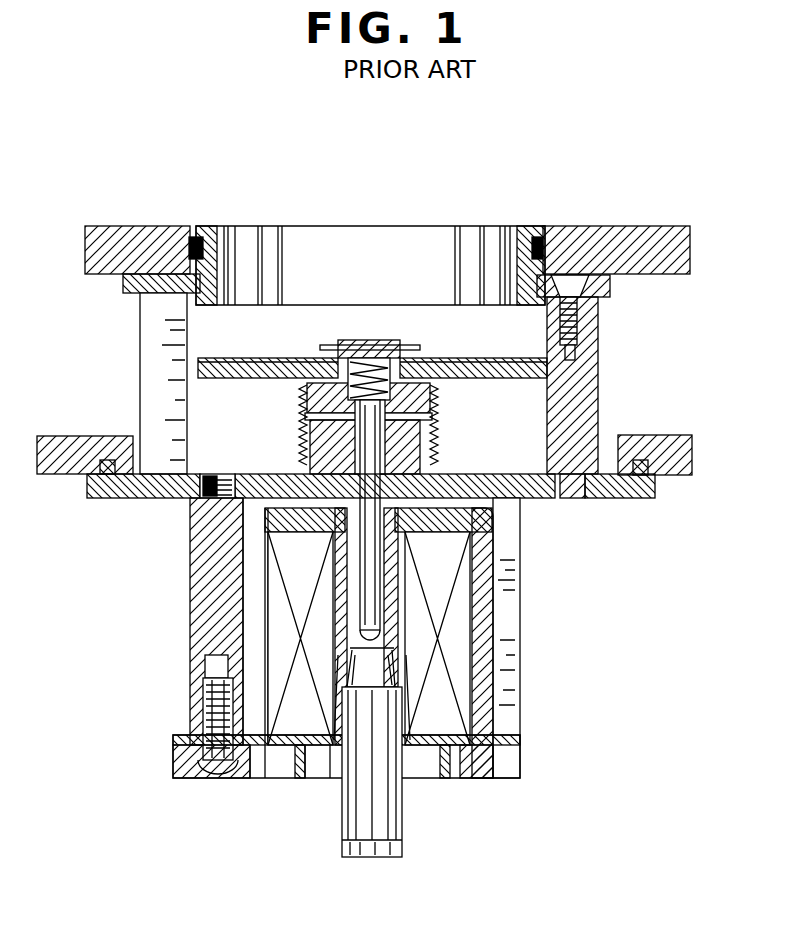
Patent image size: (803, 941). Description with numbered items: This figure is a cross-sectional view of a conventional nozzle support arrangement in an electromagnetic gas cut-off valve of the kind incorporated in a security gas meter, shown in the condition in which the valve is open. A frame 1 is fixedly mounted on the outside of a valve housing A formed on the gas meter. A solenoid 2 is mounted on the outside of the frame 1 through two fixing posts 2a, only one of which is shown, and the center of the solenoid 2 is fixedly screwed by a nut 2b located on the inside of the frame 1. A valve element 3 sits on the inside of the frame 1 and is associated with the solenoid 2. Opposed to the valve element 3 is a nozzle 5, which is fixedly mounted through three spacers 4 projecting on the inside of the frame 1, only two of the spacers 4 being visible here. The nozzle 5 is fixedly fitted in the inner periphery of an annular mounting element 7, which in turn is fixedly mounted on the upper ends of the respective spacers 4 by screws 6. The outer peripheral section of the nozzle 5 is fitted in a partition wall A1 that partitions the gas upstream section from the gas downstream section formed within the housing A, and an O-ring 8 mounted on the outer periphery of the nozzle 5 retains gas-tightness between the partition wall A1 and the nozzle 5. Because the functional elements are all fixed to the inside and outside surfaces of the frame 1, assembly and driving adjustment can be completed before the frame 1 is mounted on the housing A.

The frame 1 is at (640, 498).
The solenoid 2 is at (502, 633).
The fixing post 2a is at (200, 620).
The nut 2b is at (415, 452).
The valve element 3 is at (272, 358).
The spacer 4 is at (148, 380).
The nozzle 5 is at (538, 226).
The screw 6 is at (583, 320).
The annular mounting element 7 is at (608, 283).
The O-ring 8 is at (548, 250).
The valve housing A is at (680, 434).
The partition wall A1 is at (645, 240).